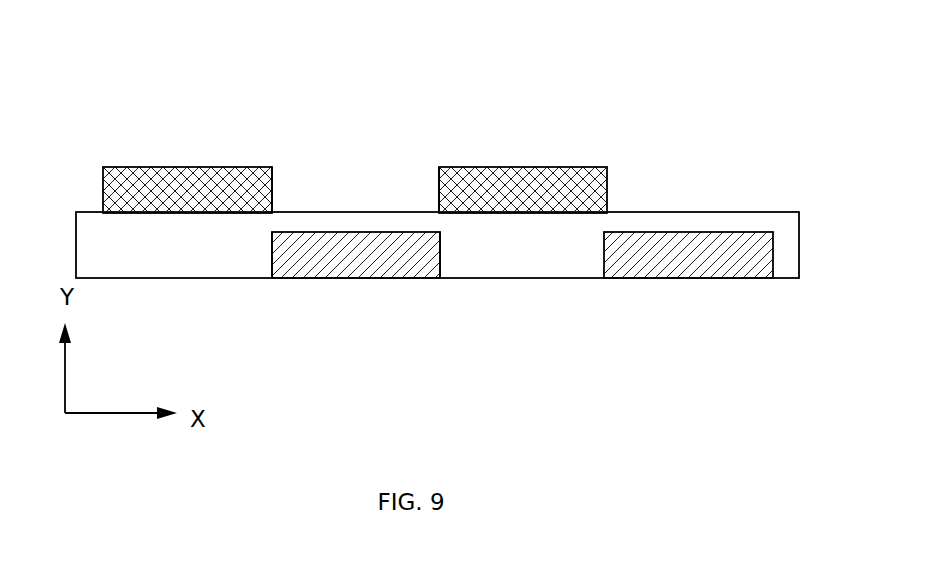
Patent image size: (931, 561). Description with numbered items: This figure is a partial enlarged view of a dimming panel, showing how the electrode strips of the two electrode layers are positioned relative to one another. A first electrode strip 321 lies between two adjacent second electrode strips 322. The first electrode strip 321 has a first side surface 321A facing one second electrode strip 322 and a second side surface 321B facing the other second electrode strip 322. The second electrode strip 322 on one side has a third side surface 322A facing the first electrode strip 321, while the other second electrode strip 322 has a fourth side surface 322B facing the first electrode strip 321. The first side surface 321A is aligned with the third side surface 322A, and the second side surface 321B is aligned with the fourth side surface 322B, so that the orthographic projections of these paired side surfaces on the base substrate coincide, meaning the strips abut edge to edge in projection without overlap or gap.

The first electrode strip 321 is at (354, 263).
The first side surface 321A is at (272, 257).
The second side surface 321B is at (440, 257).
The second electrode strip 322 is at (157, 190).
The third side surface 322A is at (273, 190).
The fourth side surface 322B is at (439, 190).